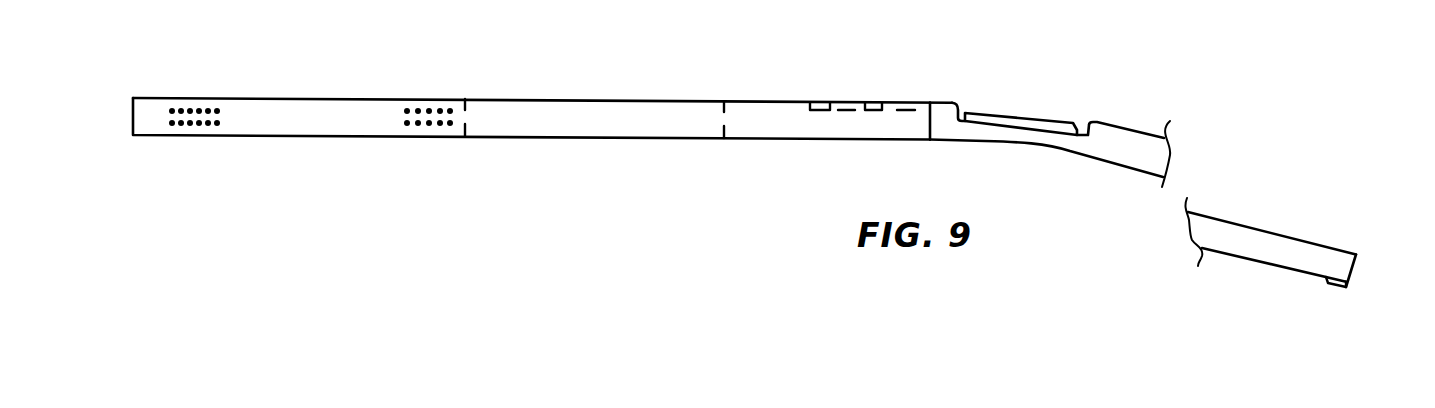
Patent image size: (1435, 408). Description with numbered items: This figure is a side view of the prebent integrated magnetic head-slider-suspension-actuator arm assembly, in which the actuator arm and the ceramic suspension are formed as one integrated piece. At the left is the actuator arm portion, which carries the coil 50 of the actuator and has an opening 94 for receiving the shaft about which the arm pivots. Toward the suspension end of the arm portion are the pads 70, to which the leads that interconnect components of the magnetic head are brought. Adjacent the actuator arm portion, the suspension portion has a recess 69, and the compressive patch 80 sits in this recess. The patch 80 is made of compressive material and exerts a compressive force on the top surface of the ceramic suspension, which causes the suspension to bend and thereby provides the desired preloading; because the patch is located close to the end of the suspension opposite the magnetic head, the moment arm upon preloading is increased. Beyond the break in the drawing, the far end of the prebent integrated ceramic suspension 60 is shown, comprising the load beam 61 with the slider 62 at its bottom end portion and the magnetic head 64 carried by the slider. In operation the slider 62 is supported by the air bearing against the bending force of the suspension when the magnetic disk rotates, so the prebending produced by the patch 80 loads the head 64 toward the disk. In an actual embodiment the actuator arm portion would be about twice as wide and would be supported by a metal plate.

The coil 50 is at (198, 112).
The opening 94 is at (614, 127).
The pads 70 is at (832, 103).
The recess 69 is at (962, 117).
The compressive patch 80 is at (1010, 120).
The prebent integrated ceramic suspension 60 is at (1320, 119).
The load beam 61 is at (1237, 223).
The slider 62 is at (1262, 253).
The magnetic head 64 is at (1340, 255).